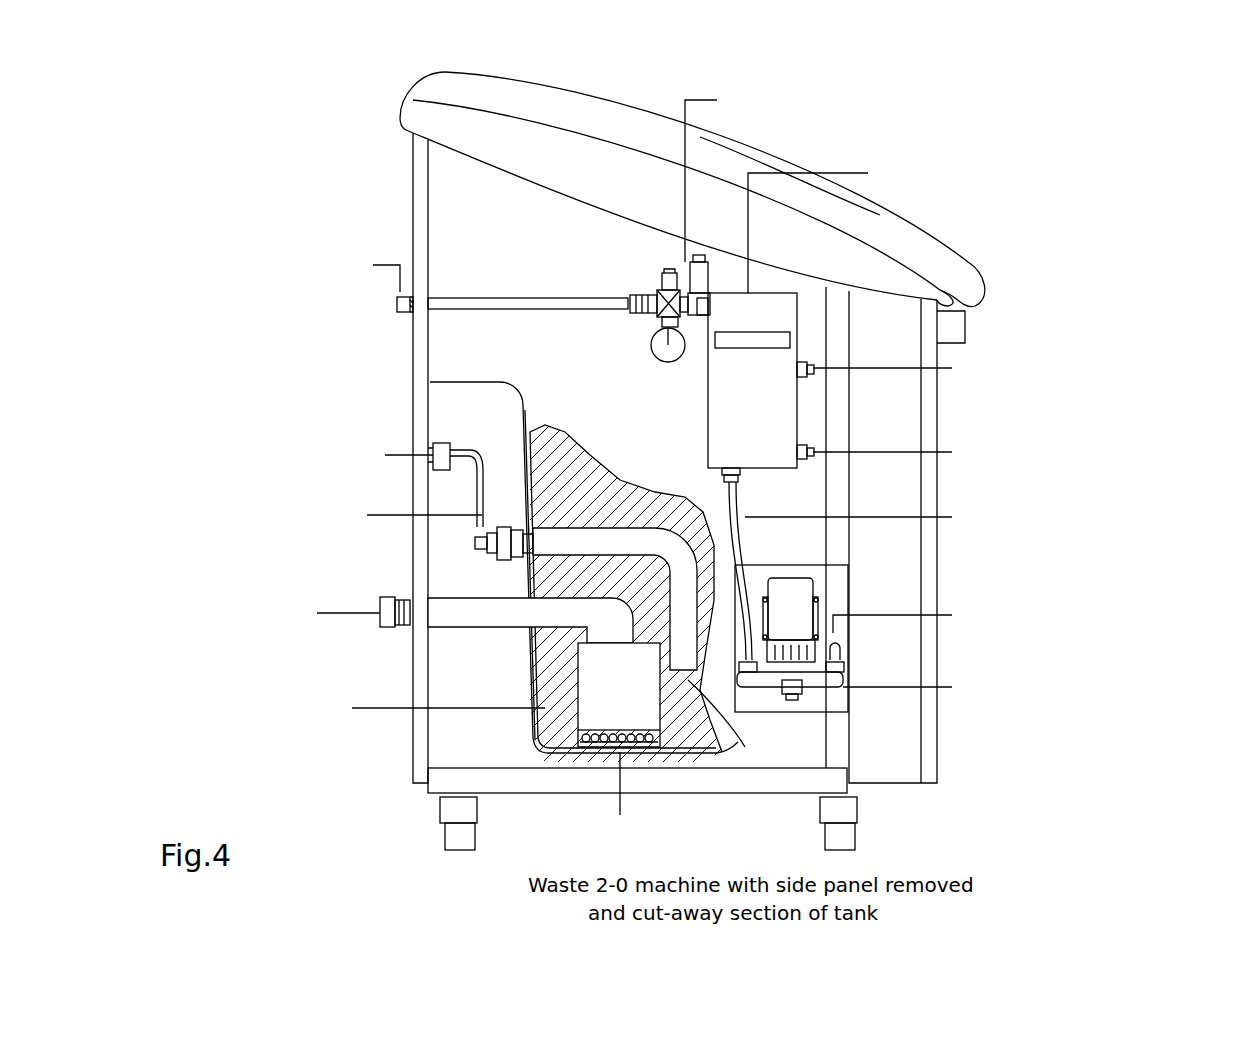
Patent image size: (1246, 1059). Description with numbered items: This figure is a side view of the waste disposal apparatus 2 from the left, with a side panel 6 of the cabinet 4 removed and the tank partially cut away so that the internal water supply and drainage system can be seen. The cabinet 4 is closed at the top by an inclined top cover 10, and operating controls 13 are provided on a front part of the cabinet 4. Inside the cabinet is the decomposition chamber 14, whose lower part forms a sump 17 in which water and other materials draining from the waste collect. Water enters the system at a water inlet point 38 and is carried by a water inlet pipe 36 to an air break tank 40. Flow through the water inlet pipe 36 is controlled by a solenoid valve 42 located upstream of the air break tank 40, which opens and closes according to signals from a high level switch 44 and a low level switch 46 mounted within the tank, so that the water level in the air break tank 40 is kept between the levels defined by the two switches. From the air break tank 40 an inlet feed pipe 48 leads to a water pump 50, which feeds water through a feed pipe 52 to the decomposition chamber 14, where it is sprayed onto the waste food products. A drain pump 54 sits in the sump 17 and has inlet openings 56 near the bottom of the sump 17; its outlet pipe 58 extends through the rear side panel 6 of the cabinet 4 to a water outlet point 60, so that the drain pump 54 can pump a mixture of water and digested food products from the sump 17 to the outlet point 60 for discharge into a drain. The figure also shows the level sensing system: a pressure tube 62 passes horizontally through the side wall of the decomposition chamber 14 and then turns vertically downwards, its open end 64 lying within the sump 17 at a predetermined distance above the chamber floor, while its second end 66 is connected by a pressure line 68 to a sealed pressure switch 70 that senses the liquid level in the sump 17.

The waste disposal apparatus 2 is at (1022, 245).
The cabinet 4 is at (422, 398).
The side panel 6 is at (422, 553).
The top cover 10 is at (497, 92).
The operating controls 13 is at (968, 328).
The decomposition chamber 14 is at (527, 570).
The sump 17 is at (548, 737).
The water inlet pipe 36 is at (520, 297).
The water inlet point 38 is at (400, 315).
The air break tank 40 is at (720, 418).
The solenoid valve 42 is at (660, 296).
The high level switch 44 is at (815, 370).
The low level switch 46 is at (815, 452).
The inlet feed pipe 48 is at (745, 543).
The water pump 50 is at (803, 598).
The feed pipe 52 is at (842, 656).
The drain pump 54 is at (590, 686).
The inlet openings 56 is at (592, 742).
The outlet pipe 58 is at (482, 620).
The water outlet point 60 is at (380, 625).
The pressure tube 62 is at (553, 540).
The open end 64 is at (725, 715).
The second end 66 is at (490, 520).
The pressure line 68 is at (470, 445).
The pressure switch 70 is at (433, 447).